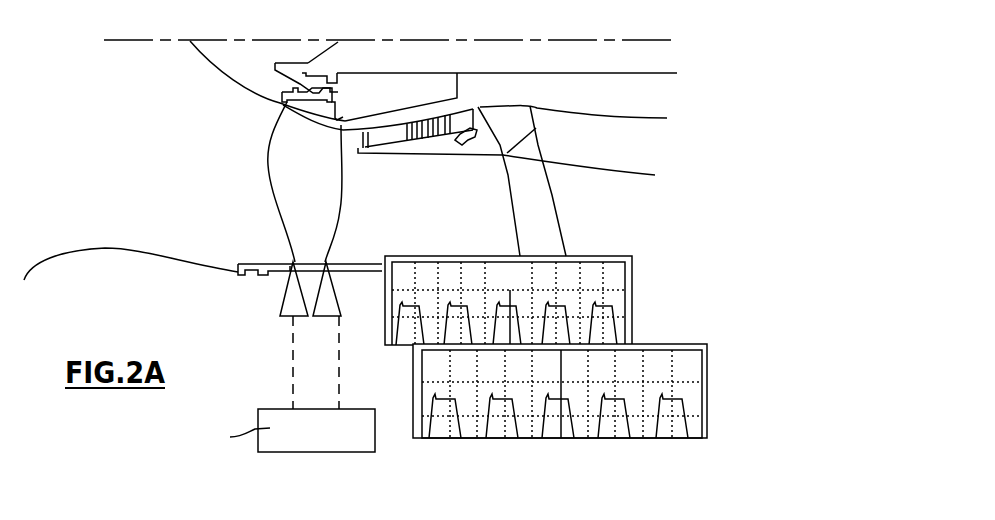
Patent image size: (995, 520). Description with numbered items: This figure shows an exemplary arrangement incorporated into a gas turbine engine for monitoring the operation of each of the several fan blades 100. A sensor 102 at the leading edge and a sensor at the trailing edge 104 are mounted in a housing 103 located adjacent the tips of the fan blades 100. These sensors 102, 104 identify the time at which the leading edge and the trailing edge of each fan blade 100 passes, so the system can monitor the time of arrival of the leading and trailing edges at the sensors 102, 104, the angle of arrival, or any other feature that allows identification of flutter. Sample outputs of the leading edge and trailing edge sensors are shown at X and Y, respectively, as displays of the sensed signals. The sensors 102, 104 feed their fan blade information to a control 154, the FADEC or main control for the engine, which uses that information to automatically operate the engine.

The fan blade 100 is at (285, 147).
The sensor 102 is at (286, 291).
The housing 103 is at (118, 251).
The trailing edge sensor 104 is at (314, 317).
The control 154 is at (348, 440).
The sample output X is at (633, 276).
The sample output Y is at (708, 378).